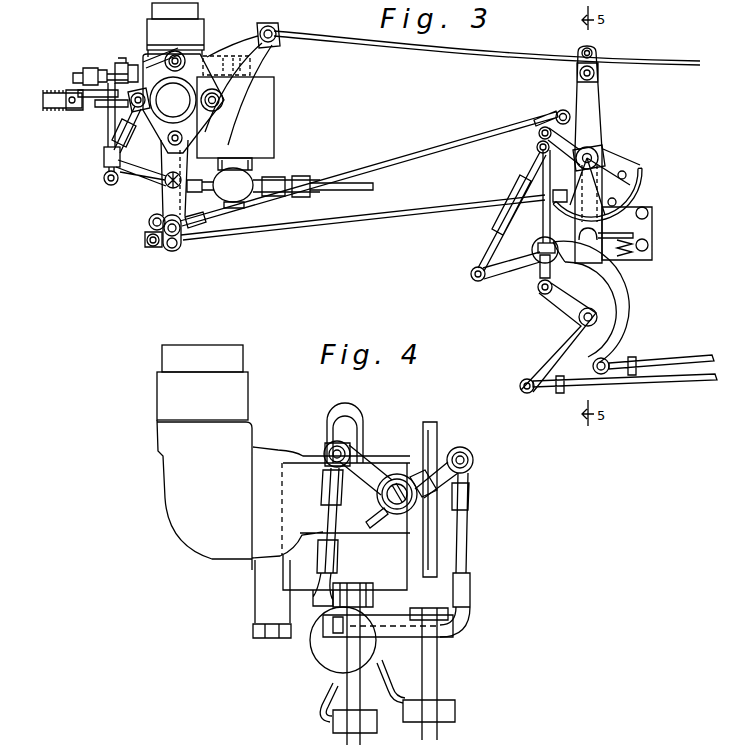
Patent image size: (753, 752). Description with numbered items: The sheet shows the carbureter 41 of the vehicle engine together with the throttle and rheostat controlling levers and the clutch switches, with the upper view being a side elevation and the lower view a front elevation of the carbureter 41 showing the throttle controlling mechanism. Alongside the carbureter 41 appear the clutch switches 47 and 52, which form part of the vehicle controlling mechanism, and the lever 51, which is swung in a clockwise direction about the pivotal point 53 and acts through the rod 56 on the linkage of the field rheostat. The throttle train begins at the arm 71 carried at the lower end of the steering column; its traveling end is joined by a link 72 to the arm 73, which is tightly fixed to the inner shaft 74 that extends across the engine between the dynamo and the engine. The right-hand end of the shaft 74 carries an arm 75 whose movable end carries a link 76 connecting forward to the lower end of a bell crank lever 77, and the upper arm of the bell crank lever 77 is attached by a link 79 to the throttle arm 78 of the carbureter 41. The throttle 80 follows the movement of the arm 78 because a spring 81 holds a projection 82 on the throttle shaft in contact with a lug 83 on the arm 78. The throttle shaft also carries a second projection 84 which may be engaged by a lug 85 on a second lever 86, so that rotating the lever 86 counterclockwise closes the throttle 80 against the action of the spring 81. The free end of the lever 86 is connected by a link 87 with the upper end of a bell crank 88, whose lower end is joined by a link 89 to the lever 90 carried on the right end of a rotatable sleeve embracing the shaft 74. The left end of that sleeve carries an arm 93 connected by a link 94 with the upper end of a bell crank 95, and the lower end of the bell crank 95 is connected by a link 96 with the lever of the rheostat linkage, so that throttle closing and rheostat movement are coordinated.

In FIG. 3, the carbureter 41 is at (255, 126).
In FIG. 4, the carbureter 41 is at (198, 503).
In FIG. 3, the clutch switch 47 is at (645, 193).
In FIG. 3, the lever 51 is at (622, 300).
In FIG. 3, the clutch switch 52 is at (500, 226).
In FIG. 3, the pivotal point 53 is at (540, 277).
In FIG. 3, the rod 56 is at (670, 362).
In FIG. 3, the arm 71 is at (508, 270).
In FIG. 3, the link 72 is at (514, 193).
In FIG. 3, the arm 73 is at (582, 147).
In FIG. 3, the inner shaft 74 is at (600, 152).
In FIG. 3, the arm 75 is at (578, 127).
In FIG. 3, the link 76 is at (386, 166).
In FIG. 4, the link 76 is at (386, 670).
In FIG. 3, the bell crank lever 77 is at (164, 212).
In FIG. 4, the bell crank lever 77 is at (432, 660).
In FIG. 3, the throttle arm 78 is at (96, 101).
In FIG. 4, the throttle arm 78 is at (447, 461).
In FIG. 3, the link 79 is at (108, 170).
In FIG. 4, the link 79 is at (470, 536).
In FIG. 4, the throttle 80 is at (393, 478).
In FIG. 3, the spring 81 is at (67, 93).
In FIG. 4, the spring 81 is at (380, 506).
In FIG. 3, the projection 82 is at (134, 94).
In FIG. 4, the projection 82 is at (414, 480).
In FIG. 3, the lug 83 is at (98, 108).
In FIG. 4, the lug 83 is at (433, 496).
In FIG. 3, the second projection 84 is at (104, 150).
In FIG. 4, the second projection 84 is at (368, 526).
In FIG. 4, the lug 85 is at (358, 468).
In FIG. 3, the second lever 86 is at (124, 62).
In FIG. 4, the second lever 86 is at (330, 436).
In FIG. 3, the link 87 is at (133, 122).
In FIG. 4, the link 87 is at (329, 516).
In FIG. 3, the bell crank 88 is at (158, 226).
In FIG. 4, the bell crank 88 is at (352, 648).
In FIG. 3, the link 89 is at (363, 217).
In FIG. 4, the link 89 is at (330, 690).
In FIG. 3, the lever 90 is at (538, 149).
In FIG. 3, the arm 93 is at (558, 112).
In FIG. 3, the link 94 is at (538, 228).
In FIG. 3, the bell crank 95 is at (566, 311).
In FIG. 3, the link 96 is at (637, 380).